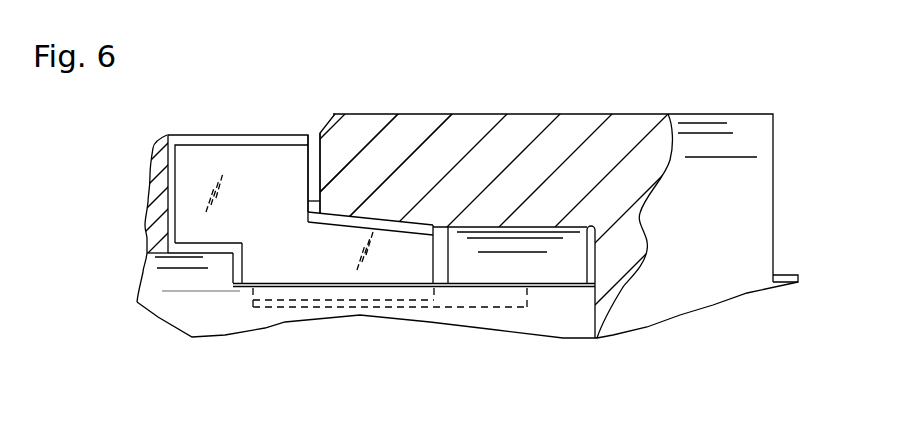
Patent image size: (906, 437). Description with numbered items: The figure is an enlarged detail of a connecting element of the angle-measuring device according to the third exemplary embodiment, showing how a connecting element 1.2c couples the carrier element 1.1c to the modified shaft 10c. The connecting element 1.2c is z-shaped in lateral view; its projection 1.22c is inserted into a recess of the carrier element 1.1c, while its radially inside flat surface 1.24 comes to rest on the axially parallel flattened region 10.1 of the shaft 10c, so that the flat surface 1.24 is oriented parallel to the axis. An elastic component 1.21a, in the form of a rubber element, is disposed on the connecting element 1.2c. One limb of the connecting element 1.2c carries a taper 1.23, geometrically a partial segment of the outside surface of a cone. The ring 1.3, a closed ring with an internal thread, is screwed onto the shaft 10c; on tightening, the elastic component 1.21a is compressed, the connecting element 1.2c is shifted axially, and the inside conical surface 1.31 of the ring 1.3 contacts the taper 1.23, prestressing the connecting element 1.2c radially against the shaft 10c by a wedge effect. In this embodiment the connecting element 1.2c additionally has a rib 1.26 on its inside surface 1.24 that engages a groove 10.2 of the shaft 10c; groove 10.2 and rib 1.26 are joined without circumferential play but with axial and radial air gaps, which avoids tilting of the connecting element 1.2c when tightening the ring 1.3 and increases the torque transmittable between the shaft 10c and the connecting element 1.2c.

The carrier element 1.1c is at (155, 190).
The elastic component 1.21a is at (317, 163).
The ring 1.3 is at (582, 133).
The conical surface 1.31 is at (400, 284).
The connecting element 1.2c is at (294, 267).
The projection 1.22c is at (203, 232).
The rib 1.26 is at (308, 293).
The taper 1.23 is at (399, 290).
The flat surface 1.24 is at (330, 288).
The flattened region 10.1 is at (332, 285).
The groove 10.2 is at (495, 305).
The shaft 10c is at (572, 320).